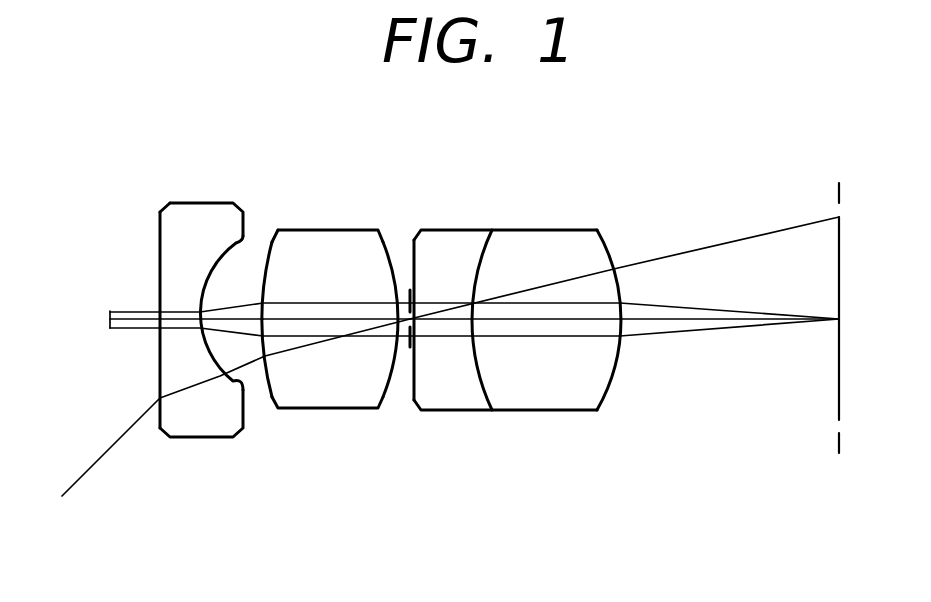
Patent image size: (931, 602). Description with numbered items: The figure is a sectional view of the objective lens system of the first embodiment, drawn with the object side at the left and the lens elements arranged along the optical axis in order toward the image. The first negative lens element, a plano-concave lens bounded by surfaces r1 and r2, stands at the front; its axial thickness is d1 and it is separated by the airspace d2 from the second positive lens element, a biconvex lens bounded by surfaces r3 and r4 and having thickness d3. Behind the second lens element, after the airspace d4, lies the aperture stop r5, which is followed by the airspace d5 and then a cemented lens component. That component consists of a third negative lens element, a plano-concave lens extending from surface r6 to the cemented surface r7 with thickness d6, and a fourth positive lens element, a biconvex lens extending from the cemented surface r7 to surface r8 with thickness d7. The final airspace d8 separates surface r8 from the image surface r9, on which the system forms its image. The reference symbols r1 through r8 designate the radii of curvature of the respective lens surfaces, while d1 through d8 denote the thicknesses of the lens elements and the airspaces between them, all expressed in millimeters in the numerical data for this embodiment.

The radius of curvature of object-side surface of first negative lens element r1 is at (162, 415).
The radius of curvature of image-side surface of first negative lens element r2 is at (240, 384).
The radius of curvature of object-side surface of second positive lens element r3 is at (265, 398).
The radius of curvature of image-side surface of second positive lens element r4 is at (393, 378).
The aperture stop r5 is at (408, 347).
The radius of curvature of object-side surface of third negative lens element r6 is at (417, 378).
The radius of curvature of cemented surface r7 is at (484, 374).
The radius of curvature of image-side surface of fourth positive lens element r8 is at (616, 368).
The image surface r9 is at (839, 384).
The thickness of first lens element d1 is at (184, 319).
The airspace between first and second lens elements d2 is at (233, 319).
The thickness of second lens element d3 is at (327, 319).
The airspace between second lens element and aperture stop d4 is at (403, 316).
The airspace between aperture stop and third lens element d5 is at (412, 312).
The thickness of third lens element d6 is at (443, 319).
The thickness of fourth lens element d7 is at (557, 319).
The airspace between fourth lens element and image surface d8 is at (674, 319).